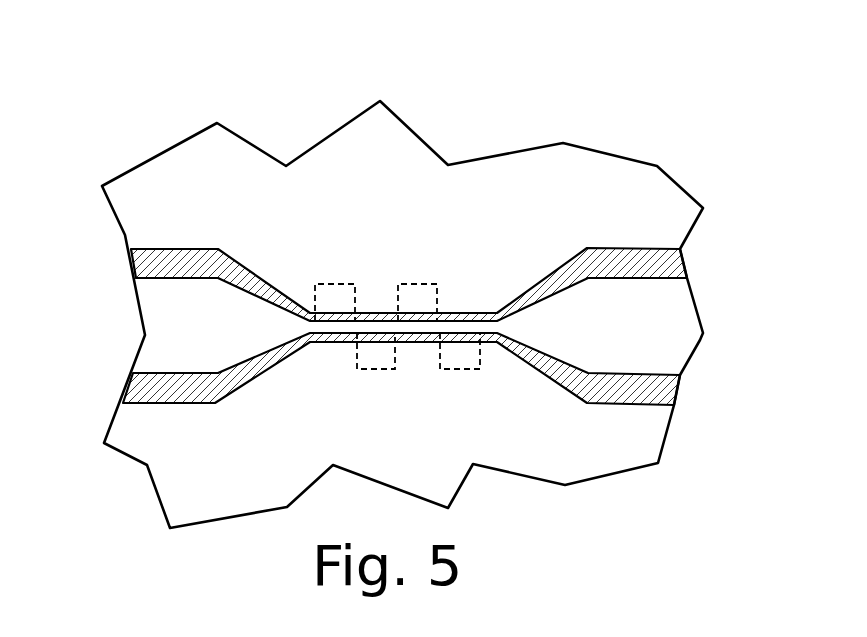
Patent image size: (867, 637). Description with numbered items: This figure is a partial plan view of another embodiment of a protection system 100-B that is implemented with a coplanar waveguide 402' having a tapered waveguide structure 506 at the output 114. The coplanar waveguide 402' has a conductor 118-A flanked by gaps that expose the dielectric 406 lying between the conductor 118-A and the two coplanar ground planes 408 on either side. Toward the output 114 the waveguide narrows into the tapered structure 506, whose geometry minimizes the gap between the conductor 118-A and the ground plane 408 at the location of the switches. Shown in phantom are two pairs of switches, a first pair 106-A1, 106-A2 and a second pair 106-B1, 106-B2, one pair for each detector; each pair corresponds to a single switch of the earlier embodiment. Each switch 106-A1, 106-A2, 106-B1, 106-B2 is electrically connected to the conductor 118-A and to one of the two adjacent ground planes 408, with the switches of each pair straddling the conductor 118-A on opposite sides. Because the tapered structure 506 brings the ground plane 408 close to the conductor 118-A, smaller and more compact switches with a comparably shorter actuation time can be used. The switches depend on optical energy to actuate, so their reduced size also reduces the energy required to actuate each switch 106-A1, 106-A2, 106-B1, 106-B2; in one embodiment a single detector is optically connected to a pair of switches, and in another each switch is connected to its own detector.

The protection system 100-B is at (688, 72).
The coplanar waveguide 402' is at (402, 302).
The ground plane 408 is at (197, 222).
The dielectric 406 is at (130, 263).
The output 114 is at (226, 338).
The tapered waveguide structure 506 is at (488, 312).
The conductor 118-A is at (497, 327).
The switch 106-A1 is at (320, 282).
The switch 106-B1 is at (432, 282).
The switch 106-A2 is at (365, 371).
The switch 106-B2 is at (470, 371).